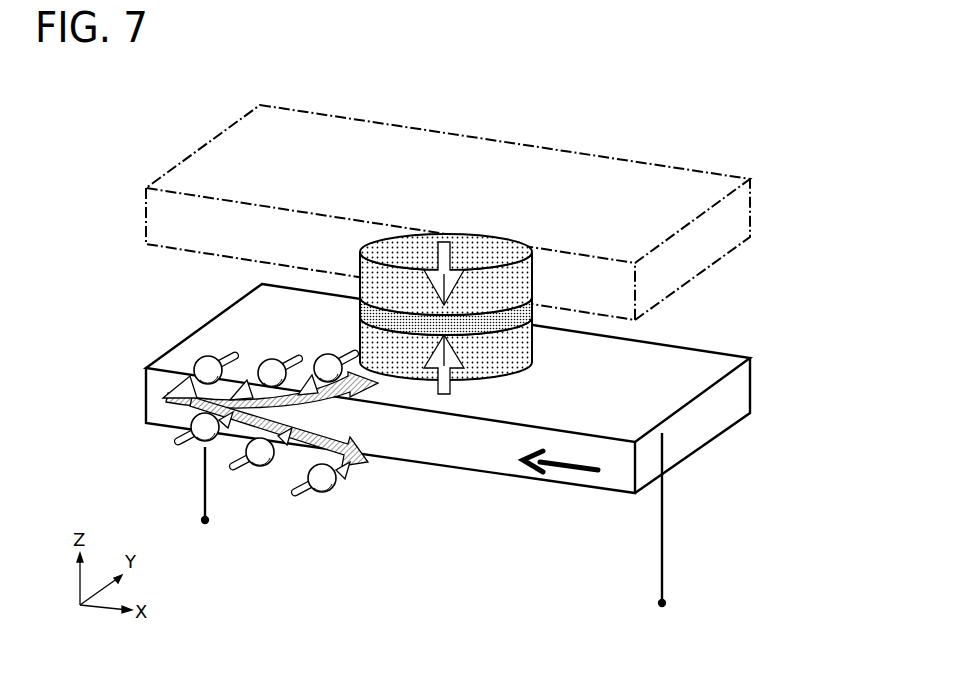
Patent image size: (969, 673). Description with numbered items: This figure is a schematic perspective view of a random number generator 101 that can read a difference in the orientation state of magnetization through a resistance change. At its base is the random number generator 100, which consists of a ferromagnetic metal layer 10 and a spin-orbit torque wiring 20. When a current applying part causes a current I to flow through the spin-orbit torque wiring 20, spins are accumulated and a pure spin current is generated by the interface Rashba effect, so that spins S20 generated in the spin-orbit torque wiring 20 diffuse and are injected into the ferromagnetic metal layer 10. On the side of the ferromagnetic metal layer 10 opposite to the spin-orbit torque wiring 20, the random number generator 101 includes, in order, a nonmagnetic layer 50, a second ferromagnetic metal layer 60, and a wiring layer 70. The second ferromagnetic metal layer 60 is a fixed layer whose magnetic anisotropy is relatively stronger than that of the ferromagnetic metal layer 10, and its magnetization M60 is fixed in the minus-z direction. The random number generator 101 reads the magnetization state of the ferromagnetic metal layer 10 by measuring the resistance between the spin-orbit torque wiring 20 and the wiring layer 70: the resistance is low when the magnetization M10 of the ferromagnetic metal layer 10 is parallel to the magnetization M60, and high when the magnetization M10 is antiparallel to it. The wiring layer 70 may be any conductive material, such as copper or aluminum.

The random number generator 101 is at (477, 344).
The wiring layer 70 is at (700, 214).
The second ferromagnetic metal layer 60 is at (513, 283).
The nonmagnetic layer 50 is at (533, 295).
The ferromagnetic metal layer 10 is at (515, 347).
The spin-orbit torque wiring 20 is at (647, 405).
The random number generator 100 is at (497, 445).
The spins S20 is at (242, 389).
The magnetization of the second ferromagnetic metal layer M60 is at (449, 252).
The magnetization of the ferromagnetic metal layer M10 is at (437, 388).
The current I is at (555, 465).